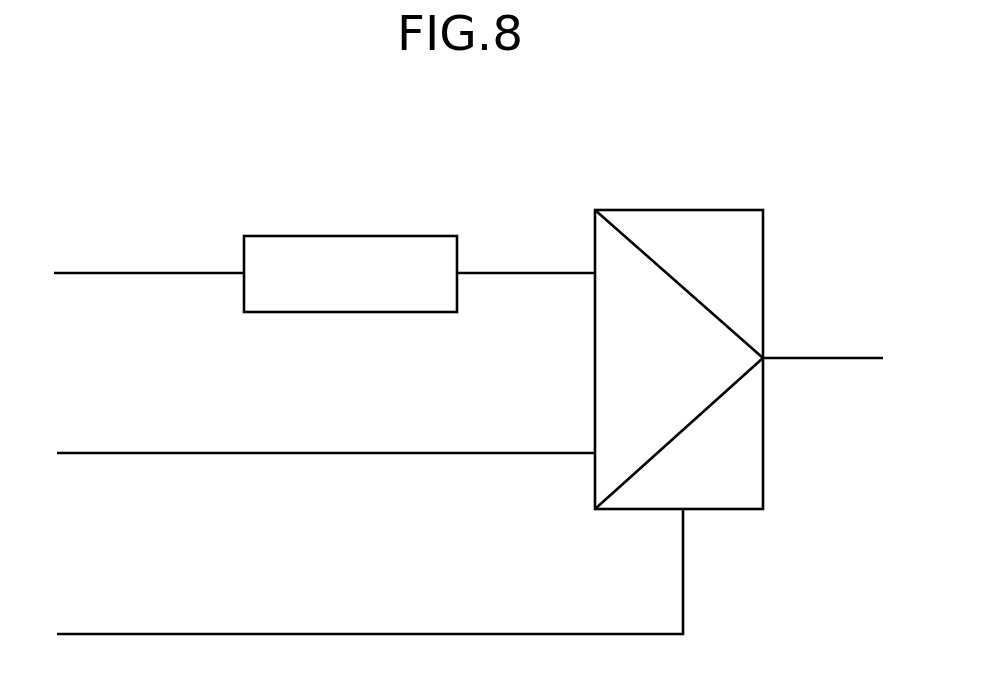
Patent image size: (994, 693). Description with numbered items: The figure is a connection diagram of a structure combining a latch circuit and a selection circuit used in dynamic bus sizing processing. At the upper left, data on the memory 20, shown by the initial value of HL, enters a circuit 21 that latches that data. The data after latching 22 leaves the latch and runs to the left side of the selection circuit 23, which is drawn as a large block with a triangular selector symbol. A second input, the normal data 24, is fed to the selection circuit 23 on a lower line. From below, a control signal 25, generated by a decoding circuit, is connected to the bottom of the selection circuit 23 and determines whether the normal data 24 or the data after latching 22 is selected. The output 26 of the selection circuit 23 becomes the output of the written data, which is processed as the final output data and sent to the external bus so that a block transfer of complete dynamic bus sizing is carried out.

The data on the memory 20 is at (148, 272).
The latch circuit 21 is at (382, 235).
The data after latching 22 is at (508, 272).
The selection circuit 23 is at (712, 208).
The normal data 24 is at (347, 453).
The control signal 25 is at (347, 634).
The output 26 is at (808, 357).